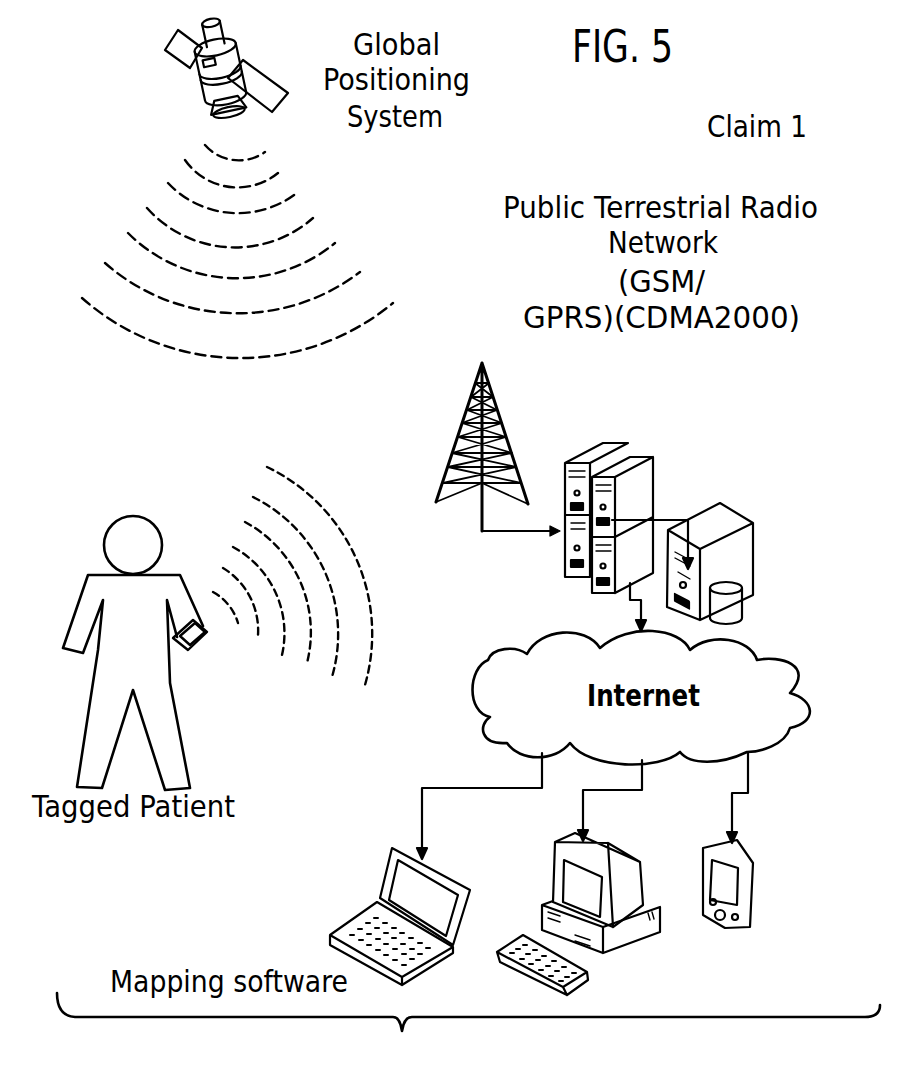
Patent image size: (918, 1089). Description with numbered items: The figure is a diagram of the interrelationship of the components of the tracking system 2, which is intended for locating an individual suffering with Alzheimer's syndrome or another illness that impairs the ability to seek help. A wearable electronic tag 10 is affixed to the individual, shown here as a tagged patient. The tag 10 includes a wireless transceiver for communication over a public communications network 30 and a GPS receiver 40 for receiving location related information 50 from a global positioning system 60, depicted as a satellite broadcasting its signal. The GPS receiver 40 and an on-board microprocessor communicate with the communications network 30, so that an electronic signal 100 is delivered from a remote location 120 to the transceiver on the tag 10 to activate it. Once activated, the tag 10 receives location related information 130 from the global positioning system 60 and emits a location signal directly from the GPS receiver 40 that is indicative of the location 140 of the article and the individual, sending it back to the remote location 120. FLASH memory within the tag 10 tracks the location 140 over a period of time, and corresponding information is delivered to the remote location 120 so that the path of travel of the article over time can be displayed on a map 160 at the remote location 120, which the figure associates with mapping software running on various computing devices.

The tracking system 2 is at (133, 653).
The wearable electronic tag 10 is at (211, 637).
The public communications network 30 is at (319, 601).
The GPS receiver 40 is at (178, 652).
The location related information 50 is at (362, 312).
The global positioning system 60 is at (246, 77).
The electronic signal 100 is at (482, 362).
The remote location 120 is at (637, 505).
The location related information 130 is at (291, 610).
The location 140 is at (198, 632).
The map 160 is at (503, 914).